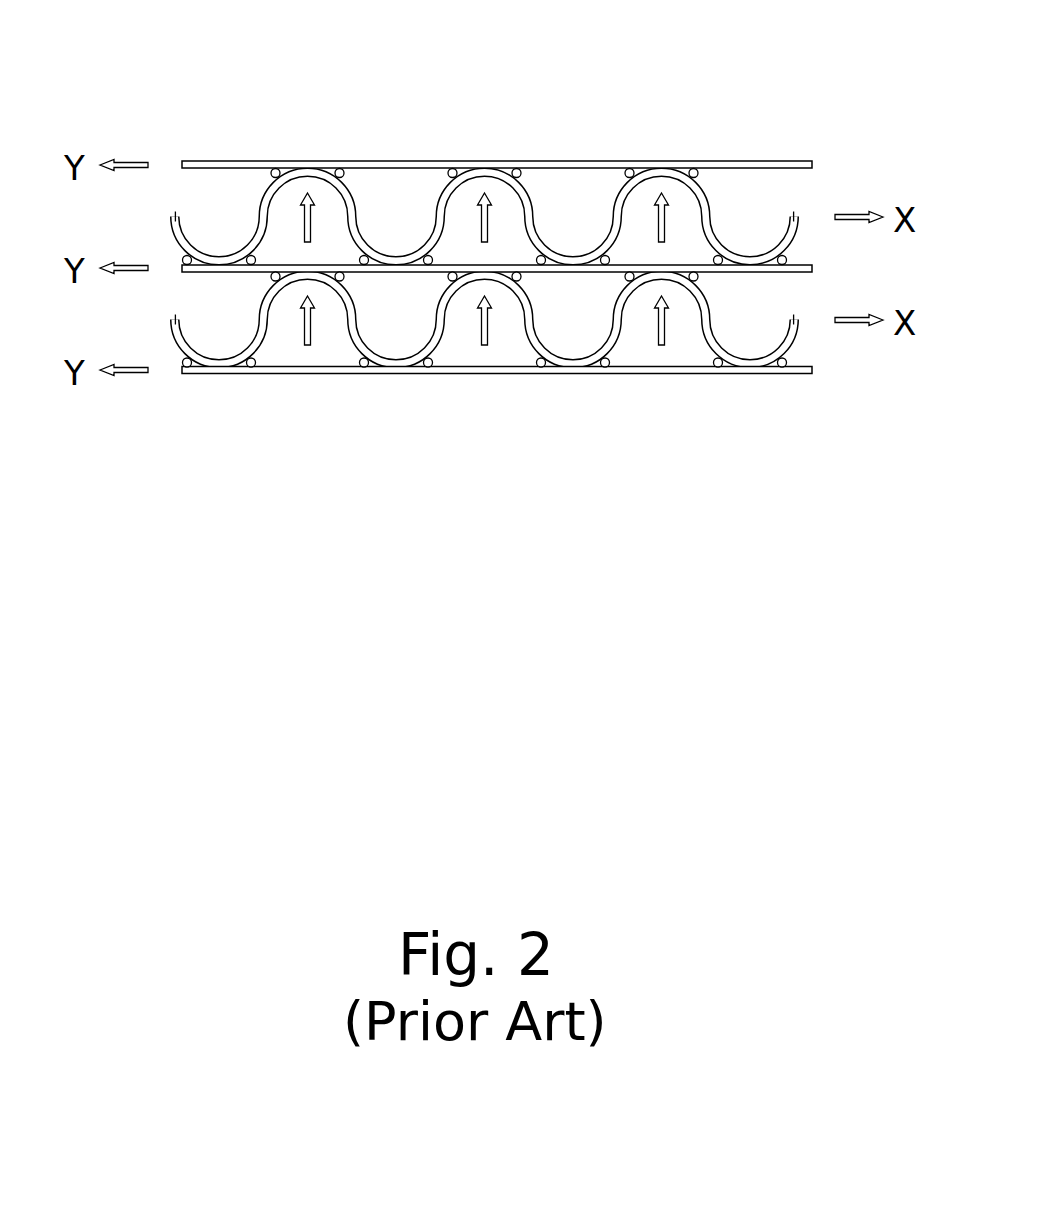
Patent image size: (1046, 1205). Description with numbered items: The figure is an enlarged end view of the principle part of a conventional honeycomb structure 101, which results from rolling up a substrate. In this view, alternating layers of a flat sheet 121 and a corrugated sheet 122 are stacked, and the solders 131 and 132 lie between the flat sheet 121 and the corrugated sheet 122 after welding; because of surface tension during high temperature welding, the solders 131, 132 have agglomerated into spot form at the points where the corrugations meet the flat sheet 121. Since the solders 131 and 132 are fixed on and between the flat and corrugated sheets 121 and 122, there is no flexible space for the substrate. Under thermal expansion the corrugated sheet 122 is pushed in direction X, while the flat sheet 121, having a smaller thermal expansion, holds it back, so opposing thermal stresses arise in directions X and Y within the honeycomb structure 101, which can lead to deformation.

The honeycomb structure 101 is at (489, 250).
The flat sheet 121 is at (447, 375).
The corrugated sheet 122 is at (527, 323).
The solder 131 is at (250, 258).
The solder 132 is at (275, 170).